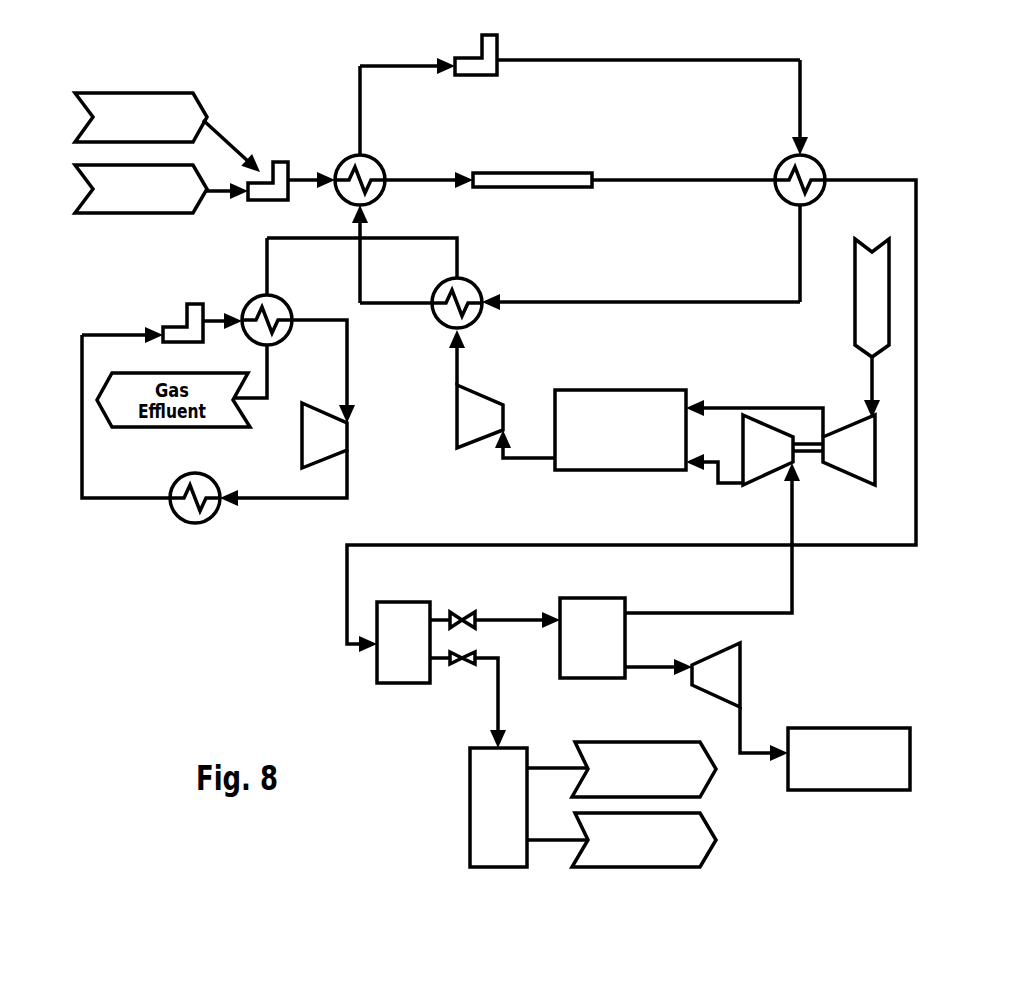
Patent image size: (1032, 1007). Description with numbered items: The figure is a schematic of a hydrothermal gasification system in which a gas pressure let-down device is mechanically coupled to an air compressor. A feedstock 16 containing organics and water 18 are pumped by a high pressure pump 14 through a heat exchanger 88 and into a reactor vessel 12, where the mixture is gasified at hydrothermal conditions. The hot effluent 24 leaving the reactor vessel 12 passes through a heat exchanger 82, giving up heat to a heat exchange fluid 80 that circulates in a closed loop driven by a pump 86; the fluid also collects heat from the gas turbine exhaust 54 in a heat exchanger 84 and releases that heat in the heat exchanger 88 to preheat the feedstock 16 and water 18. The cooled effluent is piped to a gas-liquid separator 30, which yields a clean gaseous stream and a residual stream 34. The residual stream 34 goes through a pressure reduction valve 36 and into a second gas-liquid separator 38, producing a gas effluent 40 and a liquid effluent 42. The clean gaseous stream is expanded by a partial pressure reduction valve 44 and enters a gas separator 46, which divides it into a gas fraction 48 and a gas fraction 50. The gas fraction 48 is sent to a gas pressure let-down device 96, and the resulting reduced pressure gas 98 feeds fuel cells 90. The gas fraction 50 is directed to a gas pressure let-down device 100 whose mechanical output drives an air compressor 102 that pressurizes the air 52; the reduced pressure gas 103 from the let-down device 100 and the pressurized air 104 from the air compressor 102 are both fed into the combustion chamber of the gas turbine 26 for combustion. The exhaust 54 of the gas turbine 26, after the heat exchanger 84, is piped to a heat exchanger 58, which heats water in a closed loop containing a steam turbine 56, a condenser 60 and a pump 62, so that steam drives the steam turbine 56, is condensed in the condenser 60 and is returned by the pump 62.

The reactor vessel 12 is at (505, 172).
The high pressure pump 14 is at (262, 163).
The feedstock 16 is at (125, 131).
The water 18 is at (125, 203).
The effluent 24 is at (882, 179).
The gas turbine 26 is at (582, 399).
The gas-liquid separator 30 is at (373, 662).
The residual stream 34 is at (446, 661).
The pressure reduction valve 36 is at (467, 665).
The gas-liquid separator 38 is at (468, 822).
The gas effluent 40 is at (563, 765).
The liquid effluent 42 is at (544, 846).
The partial pressure reduction valve 44 is at (460, 609).
The gas separator 46 is at (581, 650).
The gas fraction 48 is at (656, 670).
The gas fraction 50 is at (797, 577).
The air 52 is at (855, 320).
The exhaust 54 is at (455, 368).
The steam turbine 56 is at (311, 449).
The heat exchanger 58 is at (248, 298).
The condenser 60 is at (170, 509).
The pump 62 is at (172, 316).
The heat exchange fluid 80 is at (805, 93).
The heat exchanger 82 is at (826, 166).
The heat exchanger 84 is at (484, 286).
The pump 86 is at (472, 52).
The heat exchanger 88 is at (398, 180).
The fuel cells 90 is at (845, 792).
The gas pressure let-down device 96 is at (711, 686).
The reduced pressure gas 98 is at (746, 757).
The gas pressure let-down device 100 is at (751, 461).
The air compressor 102 is at (835, 461).
The reduced pressure gas 103 is at (716, 480).
The pressurized air 104 is at (740, 404).